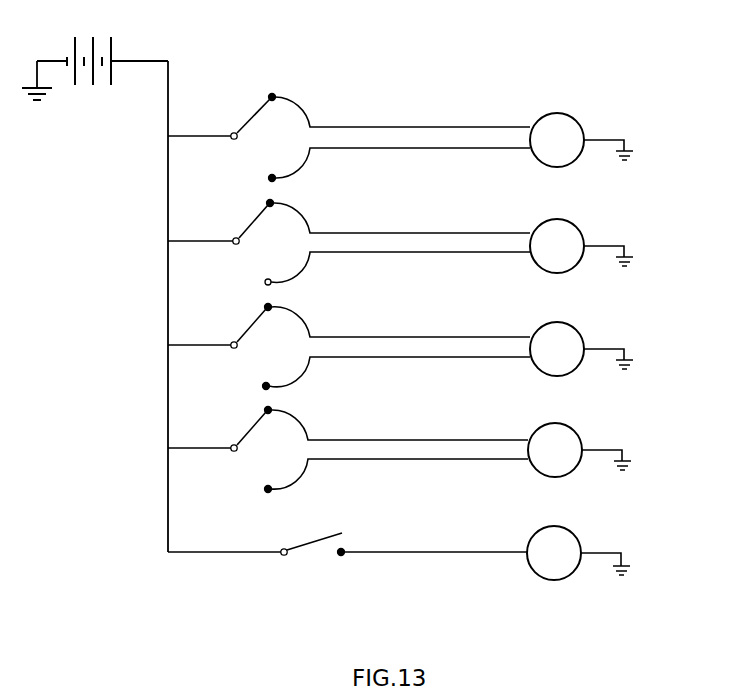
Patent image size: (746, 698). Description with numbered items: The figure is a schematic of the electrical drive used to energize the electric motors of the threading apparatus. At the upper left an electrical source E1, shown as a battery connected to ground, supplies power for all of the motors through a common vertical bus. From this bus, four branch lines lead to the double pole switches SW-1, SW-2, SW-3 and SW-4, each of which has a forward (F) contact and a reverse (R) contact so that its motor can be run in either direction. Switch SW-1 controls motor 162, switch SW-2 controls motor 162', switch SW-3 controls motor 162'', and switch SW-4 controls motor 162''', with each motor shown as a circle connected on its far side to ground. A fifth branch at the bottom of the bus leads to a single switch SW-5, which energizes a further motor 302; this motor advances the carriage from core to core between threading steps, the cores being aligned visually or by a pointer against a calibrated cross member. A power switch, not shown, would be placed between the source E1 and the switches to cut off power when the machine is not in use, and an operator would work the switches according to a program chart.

The motor 162 is at (581, 128).
The motor 162' is at (581, 235).
The motor 162'' is at (581, 338).
The motor 162''' is at (579, 440).
The motor 302 is at (531, 574).
The electrical source E1 is at (95, 57).
The double pole switch SW-1 is at (349, 138).
The double pole switch SW-2 is at (349, 243).
The double pole switch SW-3 is at (349, 347).
The double pole switch SW-4 is at (348, 450).
The switch SW-5 is at (347, 544).